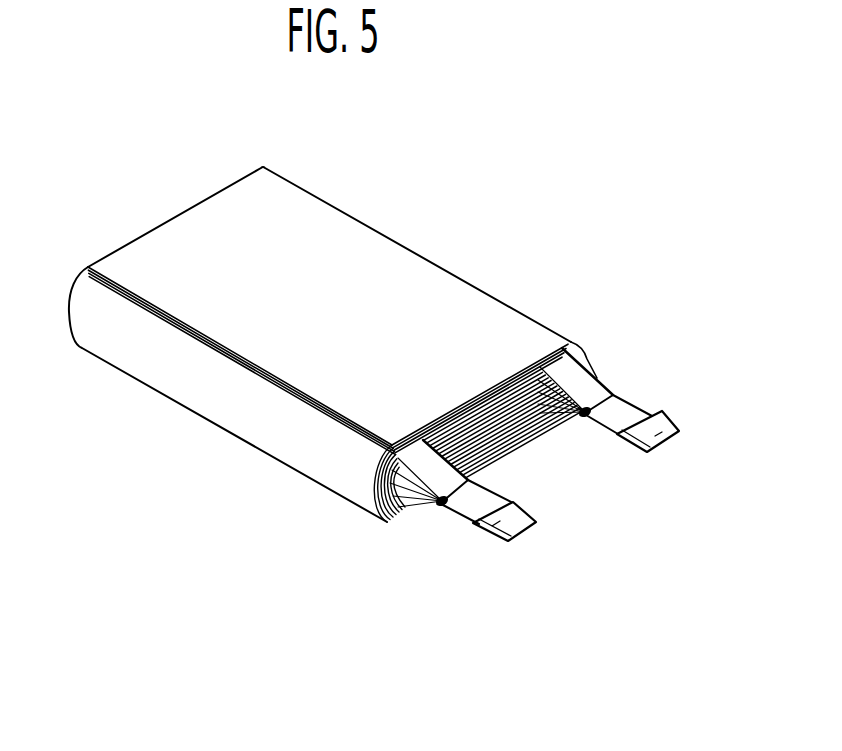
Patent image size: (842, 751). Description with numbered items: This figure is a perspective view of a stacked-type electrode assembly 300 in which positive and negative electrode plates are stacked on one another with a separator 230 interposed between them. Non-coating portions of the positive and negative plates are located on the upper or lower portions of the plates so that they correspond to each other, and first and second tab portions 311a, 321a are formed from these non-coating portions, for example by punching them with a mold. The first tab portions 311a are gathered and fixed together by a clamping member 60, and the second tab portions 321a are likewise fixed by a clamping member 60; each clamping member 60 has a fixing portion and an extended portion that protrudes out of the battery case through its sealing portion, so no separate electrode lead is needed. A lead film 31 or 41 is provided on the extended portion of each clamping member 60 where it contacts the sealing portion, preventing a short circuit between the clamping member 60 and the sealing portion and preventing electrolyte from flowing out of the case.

The stacked-type electrode assembly 300 is at (474, 177).
The separator 230 is at (455, 297).
The first tab portions 311a is at (590, 388).
The lead film 31 is at (655, 411).
The clamping member 60 is at (674, 438).
The second tab portions 321a is at (413, 476).
The lead film 41 is at (477, 528).